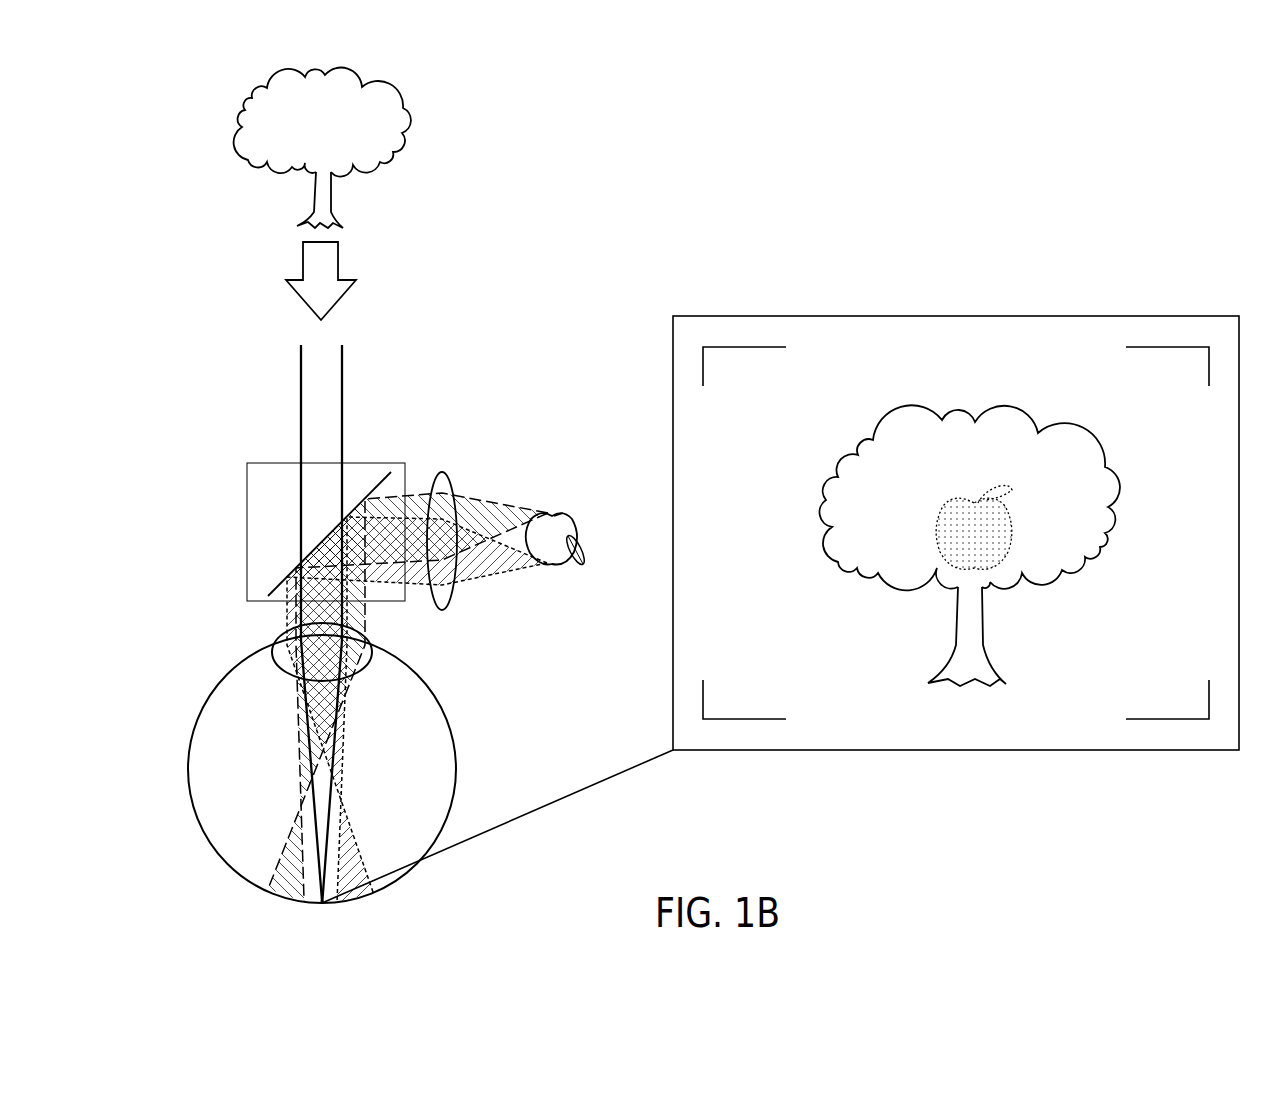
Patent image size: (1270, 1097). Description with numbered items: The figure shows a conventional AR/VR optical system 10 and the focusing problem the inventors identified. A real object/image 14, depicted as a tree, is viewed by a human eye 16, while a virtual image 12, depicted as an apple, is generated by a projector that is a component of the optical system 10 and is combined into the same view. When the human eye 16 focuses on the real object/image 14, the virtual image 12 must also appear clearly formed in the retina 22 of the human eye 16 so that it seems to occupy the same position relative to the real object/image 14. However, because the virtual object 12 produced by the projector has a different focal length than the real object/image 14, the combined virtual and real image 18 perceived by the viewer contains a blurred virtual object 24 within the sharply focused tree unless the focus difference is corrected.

The AR/VR optical system 10 is at (162, 350).
The virtual image 12 is at (578, 510).
The real-world environment 14 is at (443, 112).
The human eye 16 is at (175, 728).
The combined virtual and real image 18 is at (1027, 315).
The retina 22 is at (304, 902).
The blurred virtual object 24 is at (1007, 533).